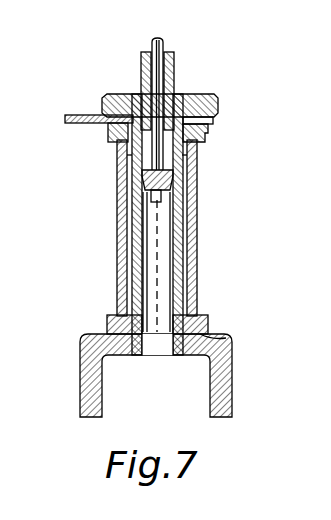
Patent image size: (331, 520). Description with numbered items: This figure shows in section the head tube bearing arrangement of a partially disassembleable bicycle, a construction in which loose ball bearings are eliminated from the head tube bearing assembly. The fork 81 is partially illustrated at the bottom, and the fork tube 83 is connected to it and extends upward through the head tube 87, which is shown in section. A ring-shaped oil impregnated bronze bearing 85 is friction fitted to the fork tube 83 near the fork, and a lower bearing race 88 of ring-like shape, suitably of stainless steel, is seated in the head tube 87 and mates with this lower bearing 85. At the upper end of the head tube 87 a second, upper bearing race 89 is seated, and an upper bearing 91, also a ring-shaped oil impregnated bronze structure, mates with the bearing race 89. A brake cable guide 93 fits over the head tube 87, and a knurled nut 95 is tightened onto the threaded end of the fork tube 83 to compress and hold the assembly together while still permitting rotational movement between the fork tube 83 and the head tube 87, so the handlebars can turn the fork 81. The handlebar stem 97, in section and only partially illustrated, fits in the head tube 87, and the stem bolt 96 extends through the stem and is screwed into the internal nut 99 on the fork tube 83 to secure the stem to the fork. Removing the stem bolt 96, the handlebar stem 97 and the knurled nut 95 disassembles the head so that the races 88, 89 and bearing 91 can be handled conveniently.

The fork 81 is at (232, 386).
The fork tube 83 is at (197, 229).
The oil impregnated bronze bearing 85 is at (228, 337).
The head tube 87 is at (200, 178).
The lower bearing race 88 is at (205, 316).
The upper bearing race 89 is at (206, 141).
The upper bearing 91 is at (212, 131).
The brake cable guide 93 is at (65, 118).
The knurled nut 95 is at (191, 94).
The stem bolt 96 is at (162, 44).
The handlebar stem 97 is at (141, 78).
The internal nut 99 is at (95, 240).